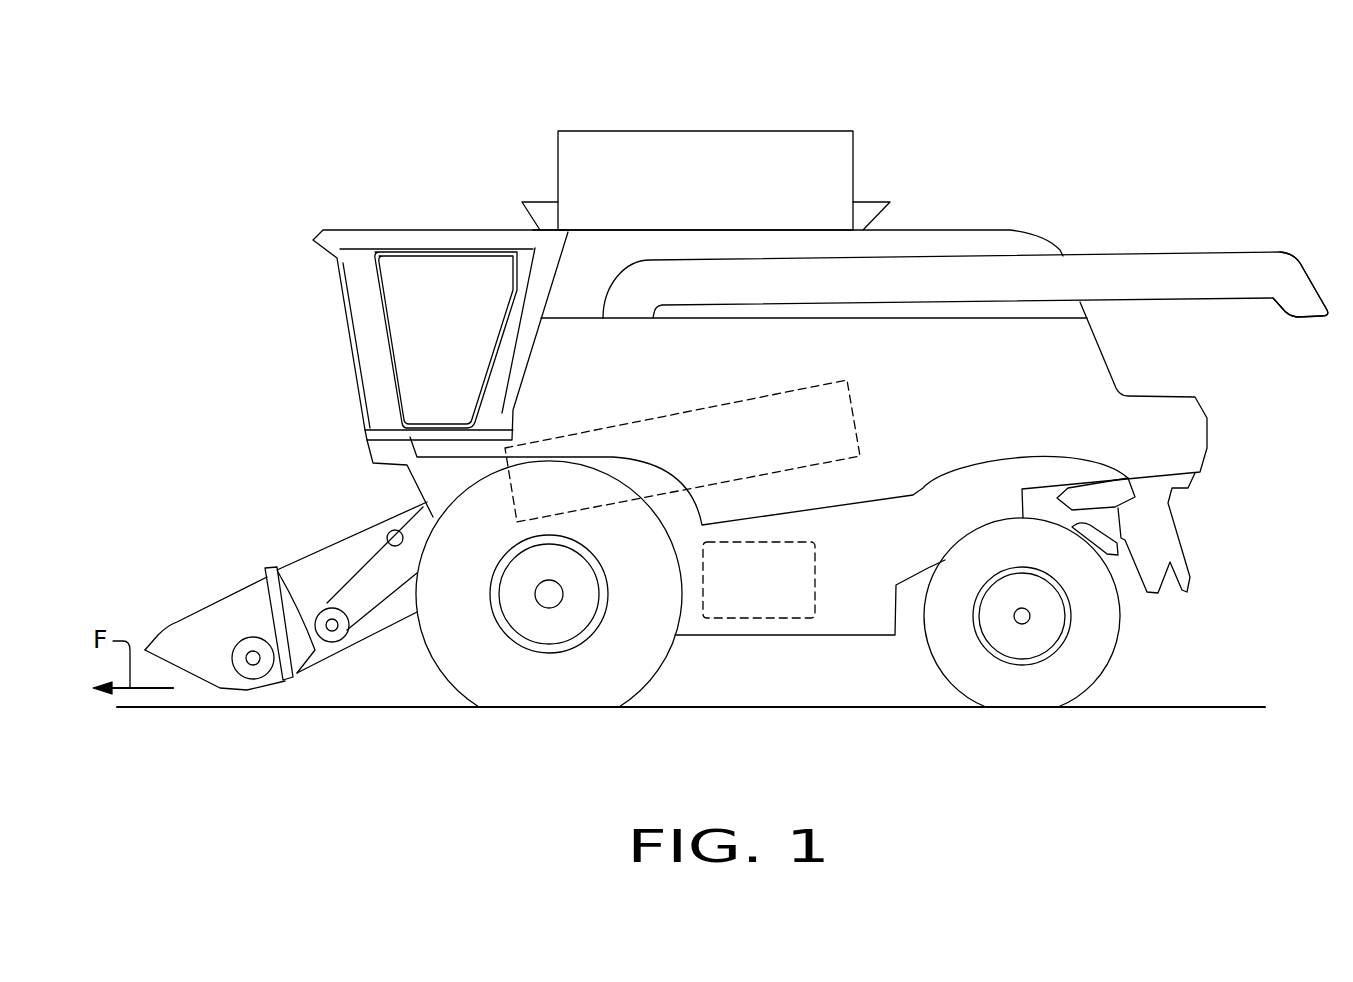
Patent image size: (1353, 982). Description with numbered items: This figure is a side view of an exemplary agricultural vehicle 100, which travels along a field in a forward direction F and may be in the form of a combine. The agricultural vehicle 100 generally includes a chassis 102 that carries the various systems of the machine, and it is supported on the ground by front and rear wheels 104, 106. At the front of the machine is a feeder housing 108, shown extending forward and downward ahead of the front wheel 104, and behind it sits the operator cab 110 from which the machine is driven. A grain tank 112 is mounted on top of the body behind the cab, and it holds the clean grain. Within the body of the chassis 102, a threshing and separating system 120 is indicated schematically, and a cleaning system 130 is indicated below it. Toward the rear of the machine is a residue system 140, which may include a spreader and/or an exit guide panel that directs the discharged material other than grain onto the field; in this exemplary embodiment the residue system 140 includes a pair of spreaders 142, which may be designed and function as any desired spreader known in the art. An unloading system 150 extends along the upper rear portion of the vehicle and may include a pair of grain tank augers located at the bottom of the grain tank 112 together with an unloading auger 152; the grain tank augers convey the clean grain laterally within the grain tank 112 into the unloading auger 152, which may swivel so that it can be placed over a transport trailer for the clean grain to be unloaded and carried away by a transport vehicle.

The agricultural vehicle 100 is at (1007, 150).
The chassis 102 is at (1200, 432).
The front wheel 104 is at (463, 665).
The rear wheel 106 is at (1095, 673).
The feeder housing 108 is at (292, 570).
The operator cab 110 is at (355, 307).
The grain tank 112 is at (665, 158).
The threshing and separating system 120 is at (700, 406).
The cleaning system 130 is at (745, 618).
The residue system 140 is at (1212, 559).
The spreader 142 is at (1118, 555).
The unloading system 150 is at (1155, 234).
The unloading auger 152 is at (1247, 260).